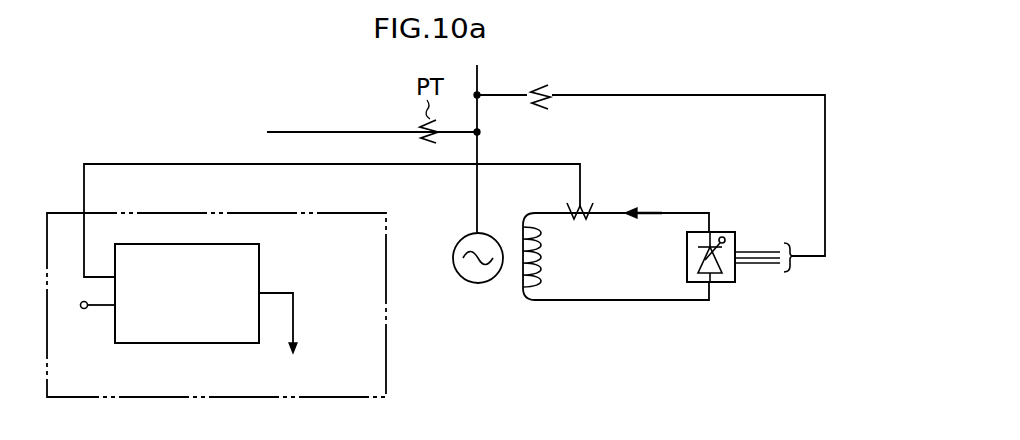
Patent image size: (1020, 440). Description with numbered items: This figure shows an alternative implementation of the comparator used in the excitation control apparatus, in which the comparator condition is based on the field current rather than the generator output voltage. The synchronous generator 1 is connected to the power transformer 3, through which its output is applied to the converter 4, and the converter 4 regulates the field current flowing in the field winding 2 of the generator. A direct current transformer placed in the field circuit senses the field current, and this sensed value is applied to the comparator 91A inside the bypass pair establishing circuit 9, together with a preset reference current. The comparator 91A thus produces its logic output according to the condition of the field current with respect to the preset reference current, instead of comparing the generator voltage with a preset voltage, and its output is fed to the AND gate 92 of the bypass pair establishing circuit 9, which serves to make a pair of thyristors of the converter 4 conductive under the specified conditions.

The synchronous generator 1 is at (459, 239).
The field winding 2 is at (521, 231).
The power transformer 3 is at (549, 83).
The converter 4 is at (736, 277).
The bypass pair establishing circuit 9 is at (386, 323).
The comparator 91A is at (259, 269).
The AND gate 92 is at (300, 338).